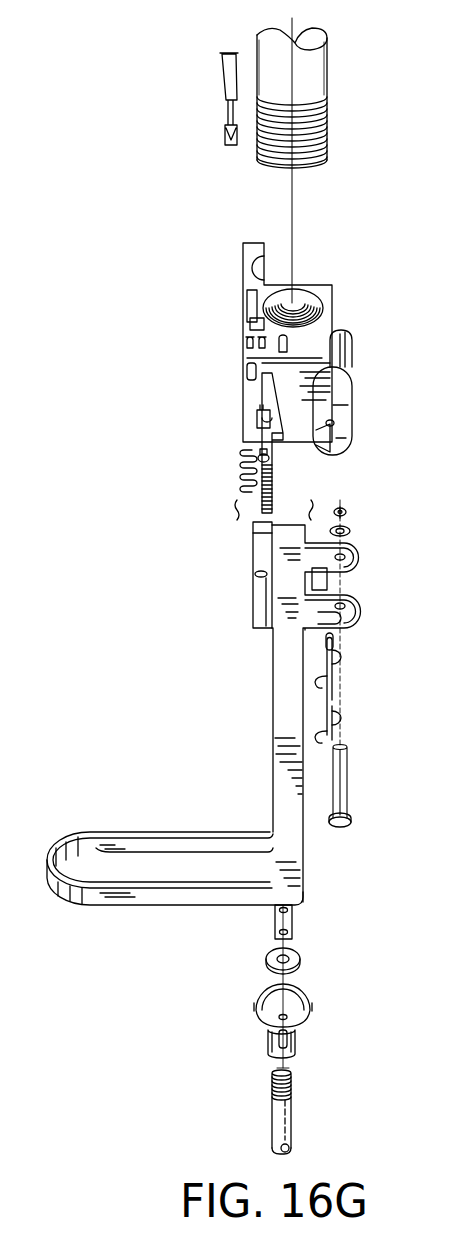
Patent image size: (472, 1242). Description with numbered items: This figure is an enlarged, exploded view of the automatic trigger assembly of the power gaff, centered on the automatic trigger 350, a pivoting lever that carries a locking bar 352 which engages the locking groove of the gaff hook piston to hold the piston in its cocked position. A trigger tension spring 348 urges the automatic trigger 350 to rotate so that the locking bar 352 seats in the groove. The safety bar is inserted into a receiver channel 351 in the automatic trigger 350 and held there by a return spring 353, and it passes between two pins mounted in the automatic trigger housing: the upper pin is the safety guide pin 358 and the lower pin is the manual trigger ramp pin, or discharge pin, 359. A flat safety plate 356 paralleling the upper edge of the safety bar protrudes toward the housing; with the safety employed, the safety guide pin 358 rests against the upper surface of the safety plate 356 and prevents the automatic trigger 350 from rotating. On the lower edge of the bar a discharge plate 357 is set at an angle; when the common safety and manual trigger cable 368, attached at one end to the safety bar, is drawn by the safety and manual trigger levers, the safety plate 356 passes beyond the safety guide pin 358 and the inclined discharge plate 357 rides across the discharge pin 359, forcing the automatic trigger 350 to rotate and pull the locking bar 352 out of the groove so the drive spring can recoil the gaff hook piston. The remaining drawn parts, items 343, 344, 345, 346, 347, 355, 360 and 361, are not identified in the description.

The safety and manual trigger cable 368 is at (222, 83).
The retaining pin 361 is at (243, 308).
The clamp block assembly 360 is at (285, 378).
The safety guide pin 358 is at (288, 342).
The manual trigger ramp pin 359 is at (247, 373).
The discharge plate 357 is at (300, 425).
The safety plate 356 is at (245, 410).
The return spring 353 is at (243, 471).
The nut 355 is at (270, 460).
The receiver channel 351 is at (253, 553).
The locking bar 352 is at (322, 587).
The trigger tension spring 348 is at (335, 693).
The automatic trigger 350 is at (180, 832).
The coupling block 347 is at (275, 922).
The inner dome 346 is at (258, 1003).
The dome cap 344 is at (293, 988).
The collar 345 is at (288, 1018).
The threaded sleeve 343 is at (292, 1083).